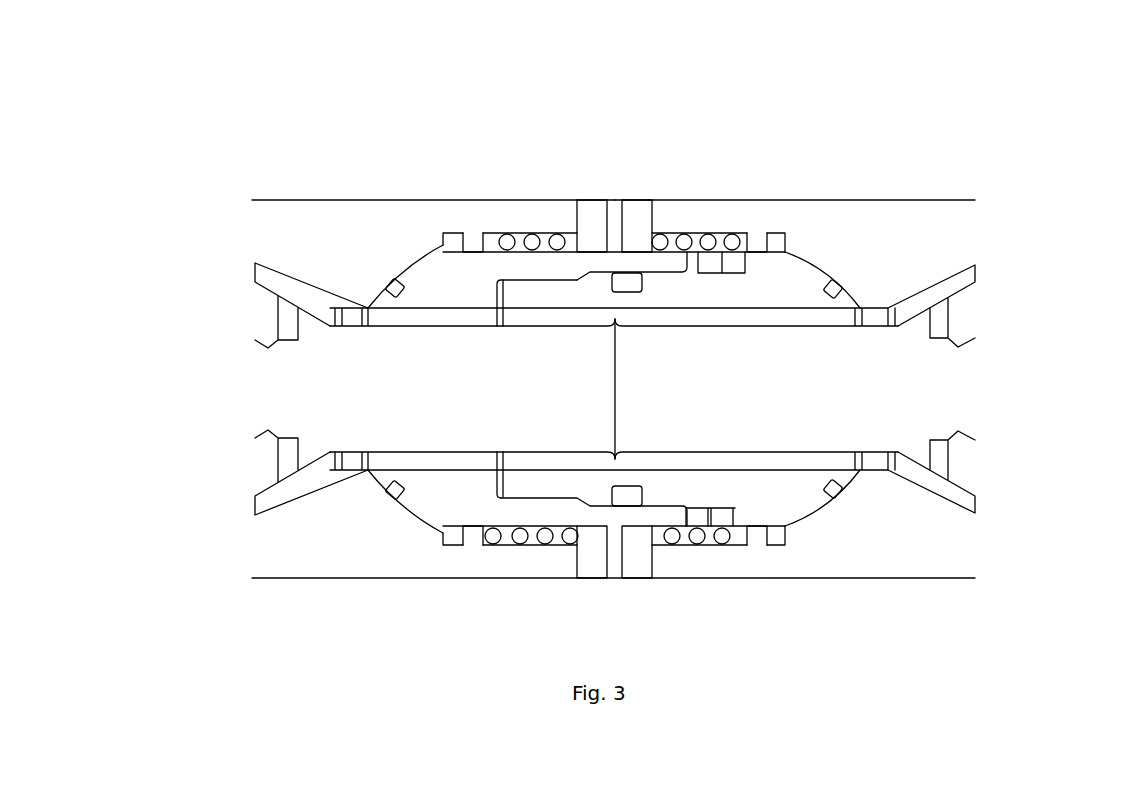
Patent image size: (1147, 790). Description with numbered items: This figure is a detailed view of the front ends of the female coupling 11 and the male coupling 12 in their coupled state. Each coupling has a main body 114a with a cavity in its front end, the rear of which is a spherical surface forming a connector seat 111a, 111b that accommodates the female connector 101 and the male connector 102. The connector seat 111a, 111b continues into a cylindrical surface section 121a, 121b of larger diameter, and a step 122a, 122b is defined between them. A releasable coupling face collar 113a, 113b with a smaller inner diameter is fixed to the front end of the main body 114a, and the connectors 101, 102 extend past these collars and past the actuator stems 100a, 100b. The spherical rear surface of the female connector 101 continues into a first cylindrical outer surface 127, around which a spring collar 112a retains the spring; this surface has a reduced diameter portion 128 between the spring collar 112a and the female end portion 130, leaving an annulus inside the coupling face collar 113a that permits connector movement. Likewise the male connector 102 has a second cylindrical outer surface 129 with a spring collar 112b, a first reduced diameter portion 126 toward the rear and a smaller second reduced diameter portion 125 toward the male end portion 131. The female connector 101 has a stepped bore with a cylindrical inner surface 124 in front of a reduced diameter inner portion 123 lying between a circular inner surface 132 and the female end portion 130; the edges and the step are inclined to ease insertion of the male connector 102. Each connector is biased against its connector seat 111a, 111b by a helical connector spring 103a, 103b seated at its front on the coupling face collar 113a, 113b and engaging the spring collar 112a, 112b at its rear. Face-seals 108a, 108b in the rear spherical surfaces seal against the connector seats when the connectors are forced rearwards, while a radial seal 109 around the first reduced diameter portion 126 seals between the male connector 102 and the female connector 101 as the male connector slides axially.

The female coupling 11 is at (288, 187).
The male coupling 12 is at (985, 182).
The actuator stem 100a is at (446, 400).
The actuator stem 100b is at (828, 393).
The female connector 101 is at (447, 285).
The male connector 102 is at (727, 288).
The helical connector spring 103a is at (533, 242).
The helical connector spring 103b is at (712, 240).
The face-seal 108a is at (393, 280).
The face-seal 108b is at (838, 280).
The radial seal 109 is at (622, 282).
The connector seat 111a is at (408, 253).
The connector seat 111b is at (818, 253).
The spring collar 112a is at (472, 233).
The spring collar 112b is at (764, 233).
The coupling face collar 113a is at (594, 225).
The coupling face collar 113b is at (644, 222).
The main body 114a is at (985, 198).
The cylindrical surface section 121a is at (497, 545).
The cylindrical surface section 121b is at (735, 548).
The step 122a is at (443, 548).
The step 122b is at (788, 548).
The reduced diameter inner portion 123 is at (533, 505).
The cylindrical inner surface 124 is at (614, 512).
The second reduced diameter portion 125 is at (553, 490).
The first reduced diameter portion 126 is at (647, 498).
The first cylindrical outer surface 127 is at (448, 533).
The reduced diameter portion 128 is at (508, 518).
The second cylindrical outer surface 129 is at (776, 528).
The female end portion 130 is at (686, 517).
The male end portion 131 is at (505, 302).
The circular inner surface 132 is at (490, 480).